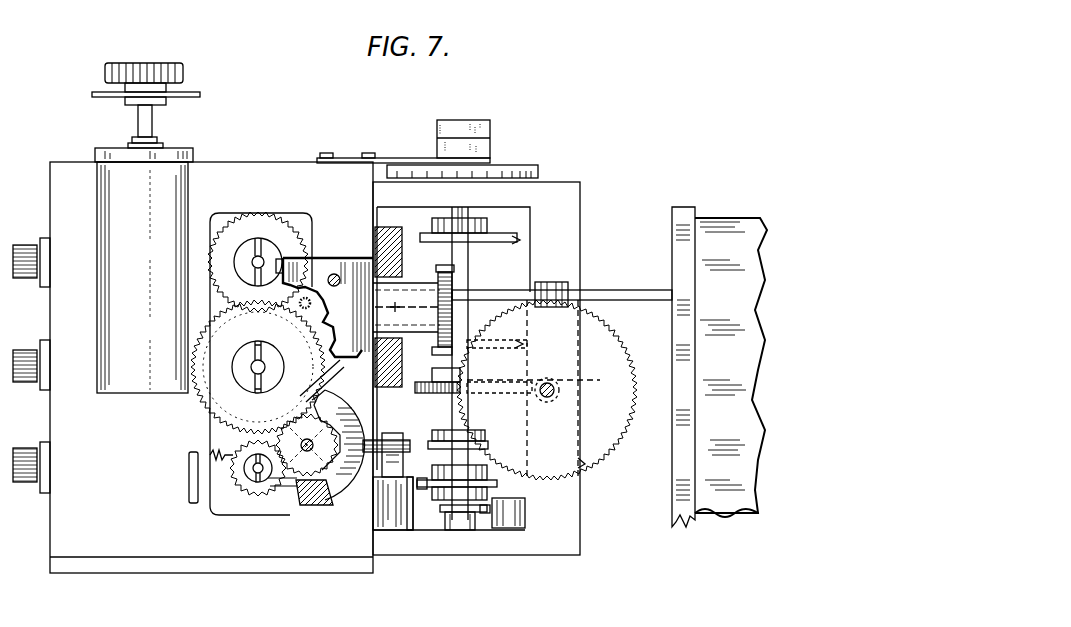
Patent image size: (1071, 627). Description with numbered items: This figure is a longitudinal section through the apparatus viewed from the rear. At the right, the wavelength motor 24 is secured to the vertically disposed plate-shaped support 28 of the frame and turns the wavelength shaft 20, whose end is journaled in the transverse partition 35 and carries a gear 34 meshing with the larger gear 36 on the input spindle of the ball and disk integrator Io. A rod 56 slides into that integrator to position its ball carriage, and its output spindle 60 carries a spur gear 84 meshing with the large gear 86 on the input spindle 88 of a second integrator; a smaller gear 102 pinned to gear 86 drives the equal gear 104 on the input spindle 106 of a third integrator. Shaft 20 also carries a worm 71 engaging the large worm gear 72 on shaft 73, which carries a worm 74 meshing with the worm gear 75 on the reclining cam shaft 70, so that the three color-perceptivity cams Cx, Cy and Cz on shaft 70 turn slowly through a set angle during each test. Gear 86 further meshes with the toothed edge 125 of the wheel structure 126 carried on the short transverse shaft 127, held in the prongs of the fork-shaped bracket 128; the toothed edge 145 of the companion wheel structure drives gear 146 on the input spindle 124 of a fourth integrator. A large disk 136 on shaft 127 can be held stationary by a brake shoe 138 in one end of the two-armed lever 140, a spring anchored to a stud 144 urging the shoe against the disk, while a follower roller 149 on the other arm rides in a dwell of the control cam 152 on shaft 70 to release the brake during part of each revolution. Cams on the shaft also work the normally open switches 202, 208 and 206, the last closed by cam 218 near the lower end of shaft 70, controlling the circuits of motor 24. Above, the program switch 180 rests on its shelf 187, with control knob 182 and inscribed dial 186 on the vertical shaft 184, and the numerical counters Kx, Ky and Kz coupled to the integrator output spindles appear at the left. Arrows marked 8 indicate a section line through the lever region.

The control knob 182 is at (186, 76).
The dial 186 is at (201, 96).
The vertical shaft 184 is at (152, 124).
The shelf 187 is at (100, 150).
The program switch 180 is at (168, 195).
The numerical counter Kx is at (38, 237).
The numerical counter Ky is at (38, 340).
The numerical counter Kz is at (38, 446).
The input spindle 106 is at (254, 257).
The gear 104 is at (263, 212).
The gear 86 is at (206, 404).
The input spindle 88 is at (251, 370).
The gear 102 is at (205, 356).
The input spindle 124 is at (250, 470).
The gear 146 is at (232, 452).
The stud 144 is at (189, 466).
The spur gear 84 is at (300, 296).
The ball and disk integrator Io is at (347, 256).
The rod 56 is at (338, 285).
The output spindle 60 is at (301, 307).
The shaft axis 8 is at (362, 346).
The disk 136 is at (303, 502).
The shaft 127 is at (312, 460).
The wheel structure 126 is at (317, 482).
The toothed circumferential edge 125 is at (337, 418).
The fork-shaped bracket 128 is at (345, 375).
The toothed circumferential edge 145 is at (292, 478).
The partition 35 is at (388, 226).
The switch 208 is at (492, 152).
The switch 202 is at (492, 135).
The cam shaft 70 is at (470, 216).
The gear 34 is at (453, 276).
The wavelength shaft 20 is at (588, 297).
The worm 71 is at (546, 284).
The gear 36 is at (440, 341).
The worm gear 75 is at (436, 395).
The worm 74 is at (574, 380).
The worm gear 72 is at (602, 333).
The shaft 73 is at (552, 398).
The cam Cx is at (520, 238).
The cam Cy is at (523, 343).
The cam Cz is at (583, 462).
The brake shoe 138 is at (372, 444).
The two-armed lever 140 is at (410, 478).
The control cam 152 is at (430, 488).
The cam follower roller 149 is at (424, 489).
The cam 218 is at (462, 510).
The switch 206 is at (516, 510).
The plate-shaped support 28 is at (696, 522).
The wavelength motor 24 is at (729, 500).